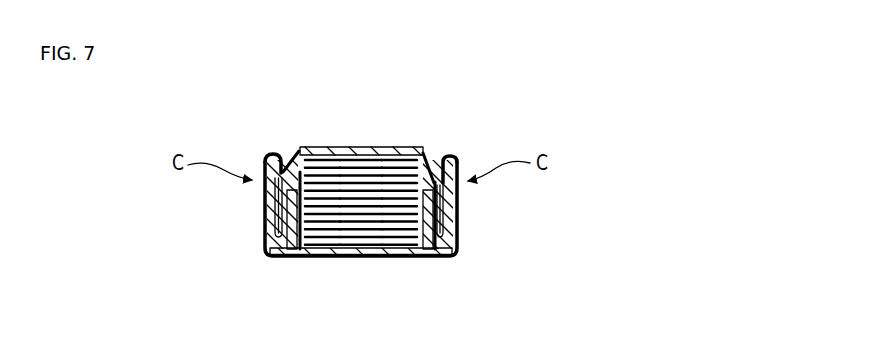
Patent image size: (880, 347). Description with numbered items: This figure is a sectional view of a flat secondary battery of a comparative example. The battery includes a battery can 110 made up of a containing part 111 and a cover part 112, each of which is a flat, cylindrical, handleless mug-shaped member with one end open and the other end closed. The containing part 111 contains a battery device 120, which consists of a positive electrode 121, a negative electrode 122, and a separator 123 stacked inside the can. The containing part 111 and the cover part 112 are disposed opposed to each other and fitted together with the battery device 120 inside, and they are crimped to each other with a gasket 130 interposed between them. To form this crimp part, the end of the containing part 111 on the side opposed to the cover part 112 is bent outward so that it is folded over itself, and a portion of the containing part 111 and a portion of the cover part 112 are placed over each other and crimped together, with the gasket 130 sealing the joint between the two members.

The battery can 110 is at (361, 112).
The containing part 111 is at (360, 149).
The cover part 112 is at (438, 256).
The battery device 120 is at (300, 147).
The positive electrode 121 is at (312, 243).
The negative electrode 122 is at (360, 240).
The separator 123 is at (396, 243).
The gasket 130 is at (277, 216).